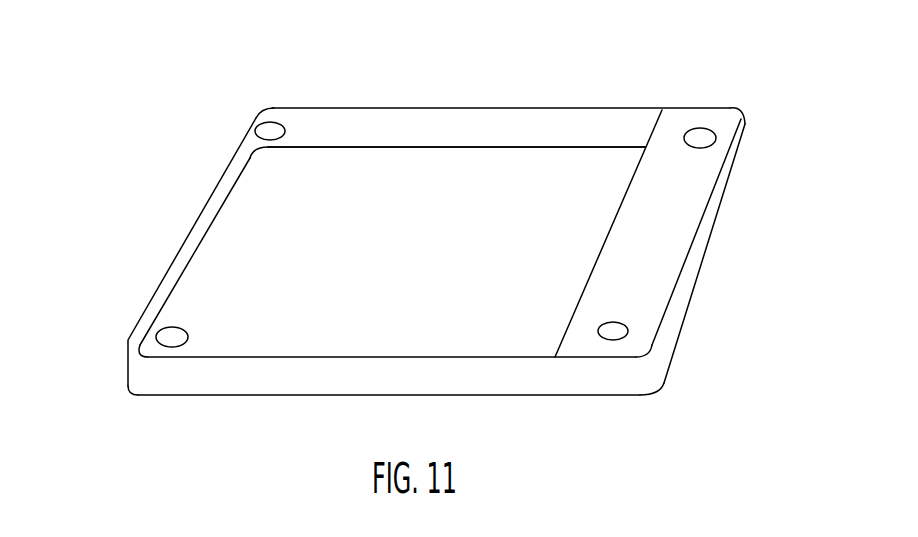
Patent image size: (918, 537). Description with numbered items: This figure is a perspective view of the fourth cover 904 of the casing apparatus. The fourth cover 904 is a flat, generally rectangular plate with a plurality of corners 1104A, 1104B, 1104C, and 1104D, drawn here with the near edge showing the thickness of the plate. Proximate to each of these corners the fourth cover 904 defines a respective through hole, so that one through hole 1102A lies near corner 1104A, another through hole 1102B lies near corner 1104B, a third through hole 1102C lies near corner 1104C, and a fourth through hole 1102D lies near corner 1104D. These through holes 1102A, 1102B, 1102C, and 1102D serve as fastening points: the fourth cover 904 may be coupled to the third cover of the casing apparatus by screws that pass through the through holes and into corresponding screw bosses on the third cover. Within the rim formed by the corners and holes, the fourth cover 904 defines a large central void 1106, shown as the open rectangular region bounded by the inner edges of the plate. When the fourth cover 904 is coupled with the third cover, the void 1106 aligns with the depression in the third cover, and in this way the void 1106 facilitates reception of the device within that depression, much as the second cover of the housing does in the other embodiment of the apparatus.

The fourth cover 904 is at (205, 47).
The through hole 1102A is at (282, 126).
The through hole 1102B is at (713, 132).
The through hole 1102C is at (156, 340).
The through hole 1102D is at (628, 331).
The corner 1104A is at (262, 108).
The corner 1104B is at (742, 114).
The corner 1104C is at (162, 373).
The corner 1104D is at (632, 373).
The void 1106 is at (493, 150).